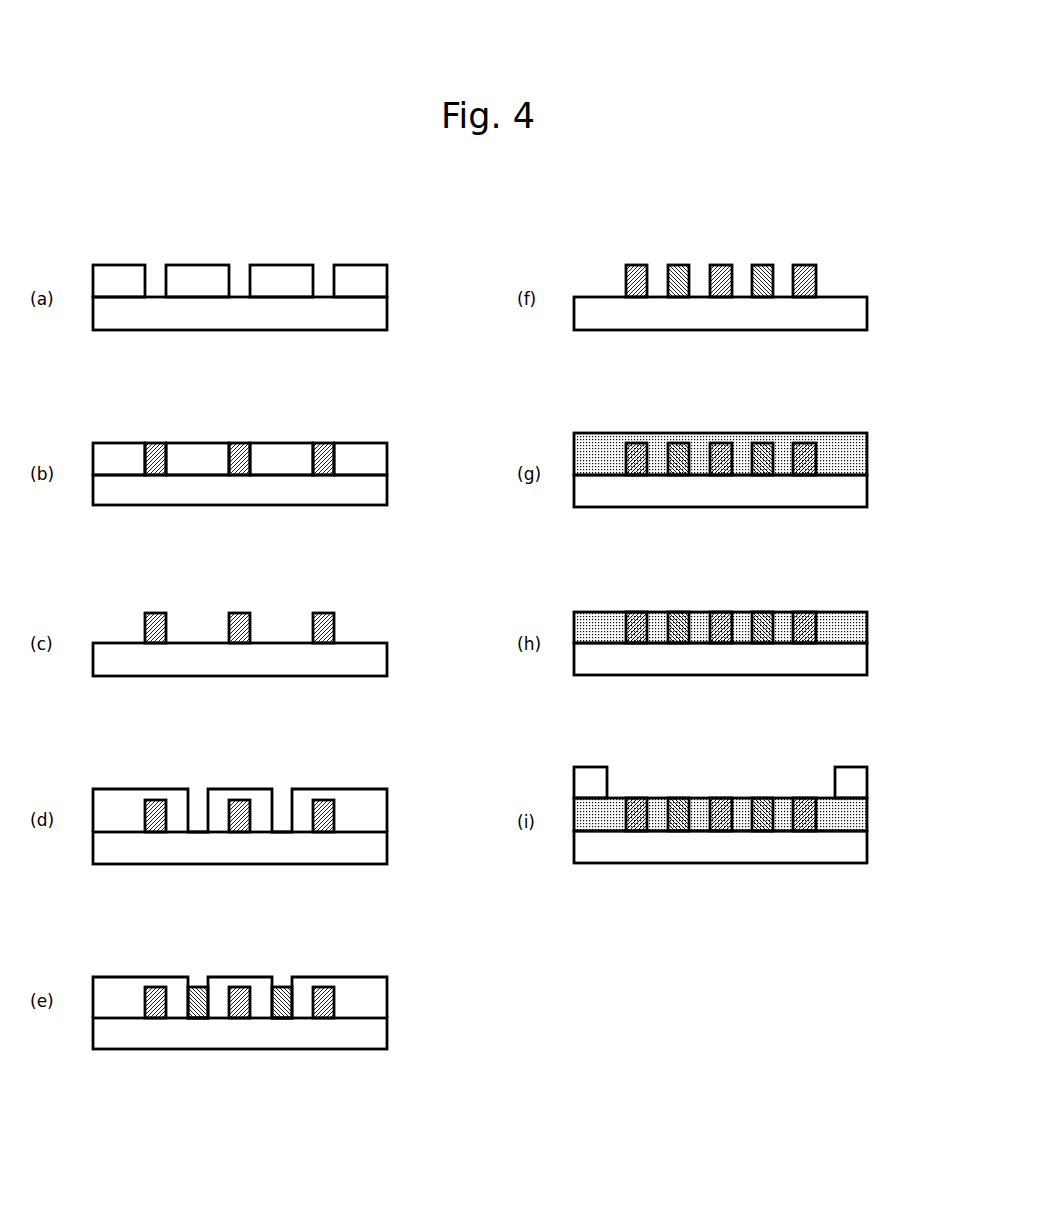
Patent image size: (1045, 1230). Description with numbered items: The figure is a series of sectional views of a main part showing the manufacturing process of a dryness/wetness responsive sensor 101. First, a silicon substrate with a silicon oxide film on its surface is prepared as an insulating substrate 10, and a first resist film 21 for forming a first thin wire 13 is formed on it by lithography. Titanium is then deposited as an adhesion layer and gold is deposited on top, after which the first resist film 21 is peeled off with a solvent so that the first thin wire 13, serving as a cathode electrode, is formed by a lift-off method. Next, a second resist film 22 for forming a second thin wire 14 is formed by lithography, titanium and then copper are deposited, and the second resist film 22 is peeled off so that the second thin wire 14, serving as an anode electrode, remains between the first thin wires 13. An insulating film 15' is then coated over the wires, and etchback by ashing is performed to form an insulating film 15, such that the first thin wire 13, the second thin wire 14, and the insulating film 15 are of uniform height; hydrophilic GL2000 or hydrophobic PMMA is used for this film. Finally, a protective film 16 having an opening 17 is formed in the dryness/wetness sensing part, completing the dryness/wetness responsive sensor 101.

The insulating substrate 10 is at (380, 308).
The first thin wire 13 is at (326, 443).
The second thin wire 14 is at (283, 987).
The insulating film 15 is at (759, 717).
The insulating film 15' is at (762, 454).
The protective film 16 is at (855, 778).
The opening 17 is at (720, 778).
The first resist film 21 is at (380, 276).
The second resist film 22 is at (380, 810).
The dryness/wetness responsive sensor 101 is at (893, 726).